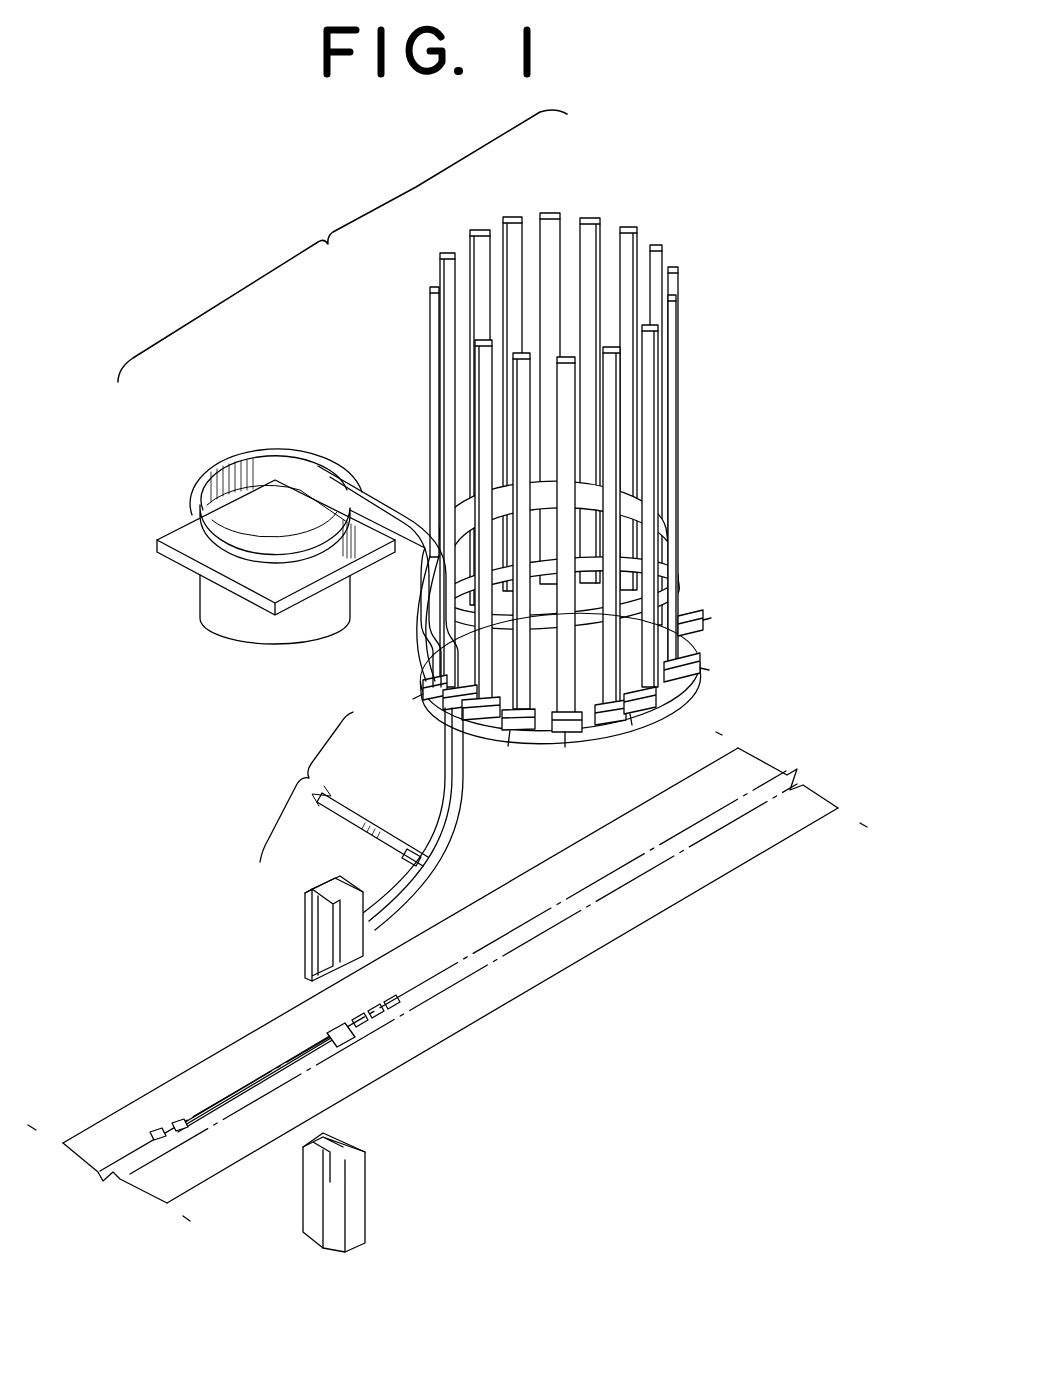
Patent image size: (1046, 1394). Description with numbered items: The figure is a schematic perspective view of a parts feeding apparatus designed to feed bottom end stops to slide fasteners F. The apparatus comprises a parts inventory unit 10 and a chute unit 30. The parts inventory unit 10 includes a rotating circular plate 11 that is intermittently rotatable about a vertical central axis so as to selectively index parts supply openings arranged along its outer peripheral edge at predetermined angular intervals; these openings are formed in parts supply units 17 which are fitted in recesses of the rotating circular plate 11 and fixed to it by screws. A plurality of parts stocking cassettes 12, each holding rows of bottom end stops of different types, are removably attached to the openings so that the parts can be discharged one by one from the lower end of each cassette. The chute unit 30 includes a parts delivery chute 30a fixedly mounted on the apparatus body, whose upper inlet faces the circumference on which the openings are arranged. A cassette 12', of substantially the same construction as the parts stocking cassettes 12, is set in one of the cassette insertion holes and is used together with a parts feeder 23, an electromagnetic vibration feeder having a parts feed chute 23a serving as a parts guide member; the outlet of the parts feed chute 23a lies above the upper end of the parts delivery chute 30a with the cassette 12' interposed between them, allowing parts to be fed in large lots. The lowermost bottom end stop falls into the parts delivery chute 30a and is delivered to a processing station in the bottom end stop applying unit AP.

The parts inventory unit 10 is at (342, 246).
The parts stocking cassettes 12 is at (556, 434).
The cassette 12' is at (372, 631).
The parts feeder 23 is at (183, 512).
The parts feed chute 23a is at (426, 560).
The rotating circular plate 11 is at (599, 738).
The parts supply units 17 is at (708, 652).
The chute unit 30 is at (330, 789).
The parts delivery chute 30a is at (452, 775).
The bottom end stop applying unit AP is at (305, 948).
The slide fasteners F is at (583, 945).